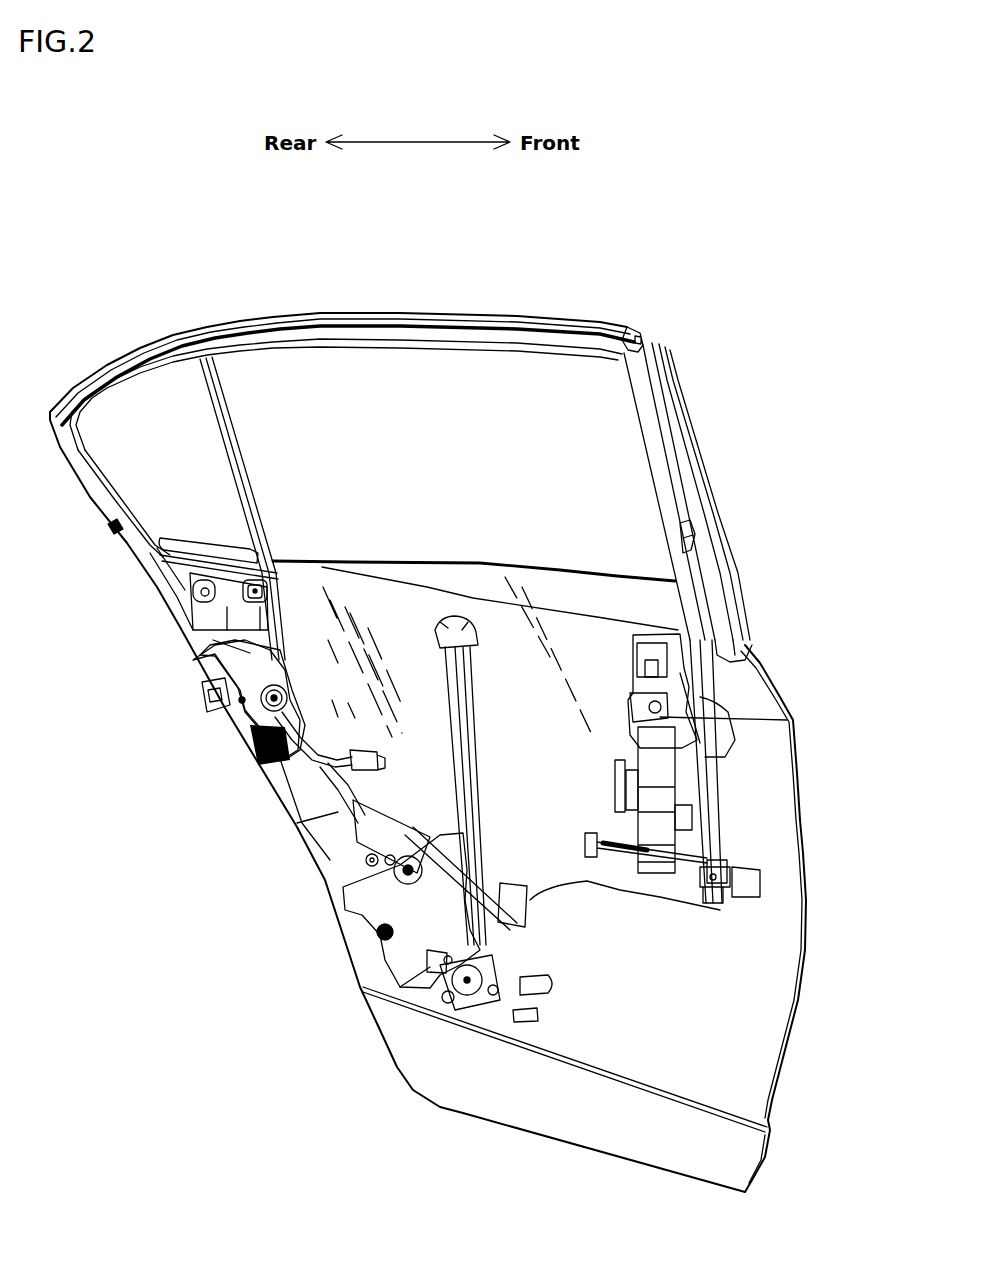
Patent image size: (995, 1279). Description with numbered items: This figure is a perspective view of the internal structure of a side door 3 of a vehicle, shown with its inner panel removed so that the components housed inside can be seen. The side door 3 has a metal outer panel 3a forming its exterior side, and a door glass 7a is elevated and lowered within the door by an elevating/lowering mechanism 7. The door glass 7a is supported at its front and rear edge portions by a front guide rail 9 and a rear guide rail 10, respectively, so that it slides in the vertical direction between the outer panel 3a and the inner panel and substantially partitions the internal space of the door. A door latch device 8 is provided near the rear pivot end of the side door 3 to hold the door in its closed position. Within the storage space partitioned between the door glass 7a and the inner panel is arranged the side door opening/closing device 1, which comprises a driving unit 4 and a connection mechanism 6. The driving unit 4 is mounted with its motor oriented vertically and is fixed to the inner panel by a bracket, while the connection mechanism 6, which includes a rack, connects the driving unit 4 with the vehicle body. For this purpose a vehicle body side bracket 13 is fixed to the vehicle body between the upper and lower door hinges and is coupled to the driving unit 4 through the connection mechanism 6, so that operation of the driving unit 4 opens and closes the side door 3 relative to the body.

The side door opening/closing device 1 is at (600, 790).
The side door 3 is at (704, 434).
The outer panel 3a is at (800, 773).
The driving unit 4 is at (621, 743).
The connection mechanism 6 is at (629, 869).
The elevating/lowering mechanism 7 is at (494, 749).
The door glass 7a is at (537, 585).
The door latch device 8 is at (230, 740).
The front guide rail 9 is at (725, 833).
The rear guide rail 10 is at (267, 525).
The vehicle body side bracket 13 is at (720, 883).